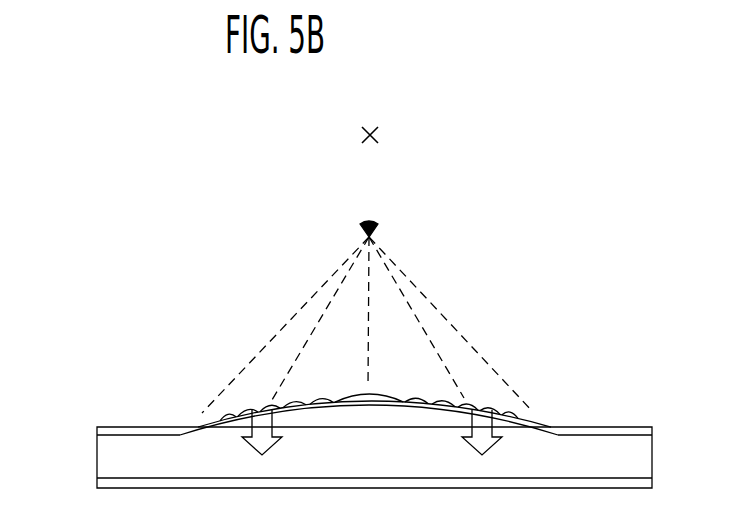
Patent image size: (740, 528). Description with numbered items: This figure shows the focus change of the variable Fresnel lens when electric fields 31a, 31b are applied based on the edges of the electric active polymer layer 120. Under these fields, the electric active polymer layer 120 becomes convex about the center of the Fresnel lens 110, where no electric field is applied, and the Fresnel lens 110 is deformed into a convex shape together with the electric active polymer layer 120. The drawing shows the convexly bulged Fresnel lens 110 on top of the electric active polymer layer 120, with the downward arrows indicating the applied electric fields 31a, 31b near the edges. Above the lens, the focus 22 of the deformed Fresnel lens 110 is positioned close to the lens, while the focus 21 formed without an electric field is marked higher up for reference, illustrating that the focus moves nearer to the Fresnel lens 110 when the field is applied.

The focus 21 is at (380, 134).
The focus 22 is at (377, 222).
The Fresnel lens 110 is at (505, 413).
The electric active polymer layer 120 is at (92, 427).
The electric field 31a is at (262, 418).
The electric field 31b is at (482, 416).